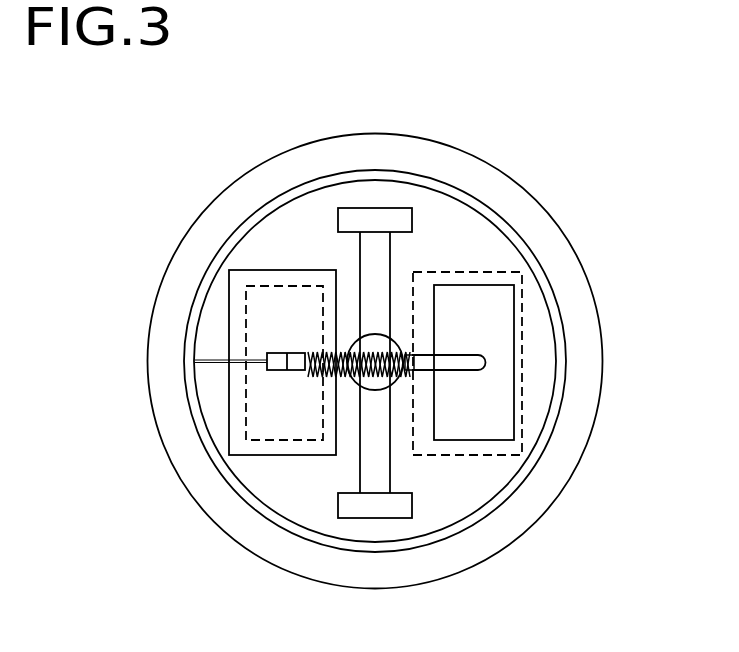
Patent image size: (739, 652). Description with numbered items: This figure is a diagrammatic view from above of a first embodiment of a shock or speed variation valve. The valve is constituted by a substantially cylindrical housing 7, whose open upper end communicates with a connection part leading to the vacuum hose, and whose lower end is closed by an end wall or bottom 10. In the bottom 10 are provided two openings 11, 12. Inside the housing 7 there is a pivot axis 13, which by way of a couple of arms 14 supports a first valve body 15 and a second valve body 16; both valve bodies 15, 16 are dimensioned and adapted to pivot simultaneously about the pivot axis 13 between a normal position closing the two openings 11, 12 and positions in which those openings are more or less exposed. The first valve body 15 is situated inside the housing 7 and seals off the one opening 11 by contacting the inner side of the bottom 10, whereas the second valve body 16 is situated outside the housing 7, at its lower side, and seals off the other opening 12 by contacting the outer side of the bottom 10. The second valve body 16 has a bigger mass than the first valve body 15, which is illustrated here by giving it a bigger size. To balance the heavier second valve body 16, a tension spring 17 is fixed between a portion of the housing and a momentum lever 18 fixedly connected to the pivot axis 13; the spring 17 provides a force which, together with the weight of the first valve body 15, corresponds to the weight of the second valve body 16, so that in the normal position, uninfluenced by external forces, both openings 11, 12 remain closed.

The cylindrical housing 7 is at (460, 192).
The bottom 10 is at (487, 247).
The opening 11 is at (256, 441).
The opening 12 is at (502, 298).
The pivot axis 13 is at (385, 480).
The arms 14 is at (468, 362).
The first valve body 15 is at (233, 292).
The second valve body 16 is at (522, 455).
The tension spring 17 is at (348, 356).
The momentum lever 18 is at (412, 352).